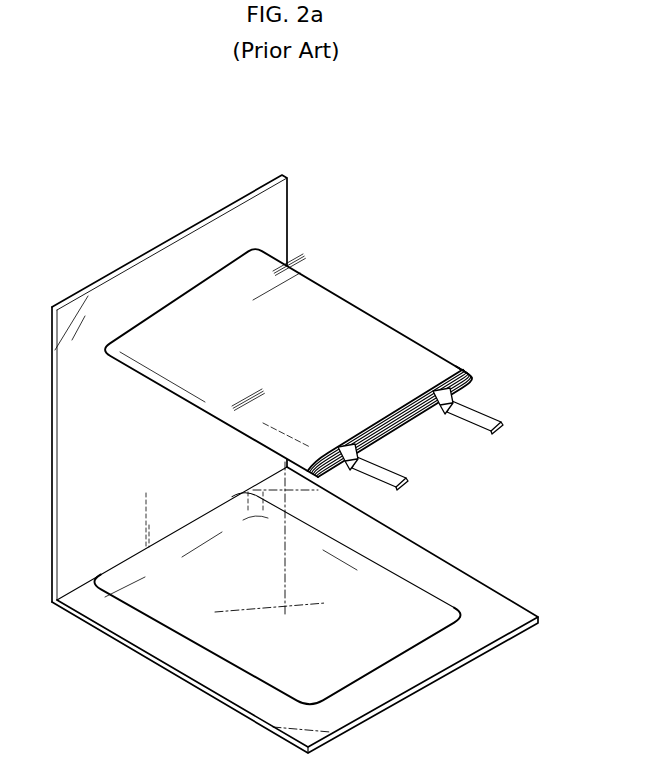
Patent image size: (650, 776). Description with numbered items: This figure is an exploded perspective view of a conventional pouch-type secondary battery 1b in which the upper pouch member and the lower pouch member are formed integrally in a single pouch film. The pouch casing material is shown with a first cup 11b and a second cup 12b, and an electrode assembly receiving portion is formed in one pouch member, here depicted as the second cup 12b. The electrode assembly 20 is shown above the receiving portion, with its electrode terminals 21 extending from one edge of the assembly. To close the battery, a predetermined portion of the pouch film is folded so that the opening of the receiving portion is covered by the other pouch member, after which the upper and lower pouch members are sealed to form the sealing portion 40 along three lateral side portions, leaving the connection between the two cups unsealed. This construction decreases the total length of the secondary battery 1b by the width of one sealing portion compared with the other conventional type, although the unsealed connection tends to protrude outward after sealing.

The pouch-type secondary battery 1b is at (53, 144).
The first cup 11b is at (280, 199).
The second cup 12b is at (252, 667).
The electrode assembly 20 is at (374, 307).
The electrode terminal 21 is at (502, 427).
The sealing portion 40 is at (463, 583).